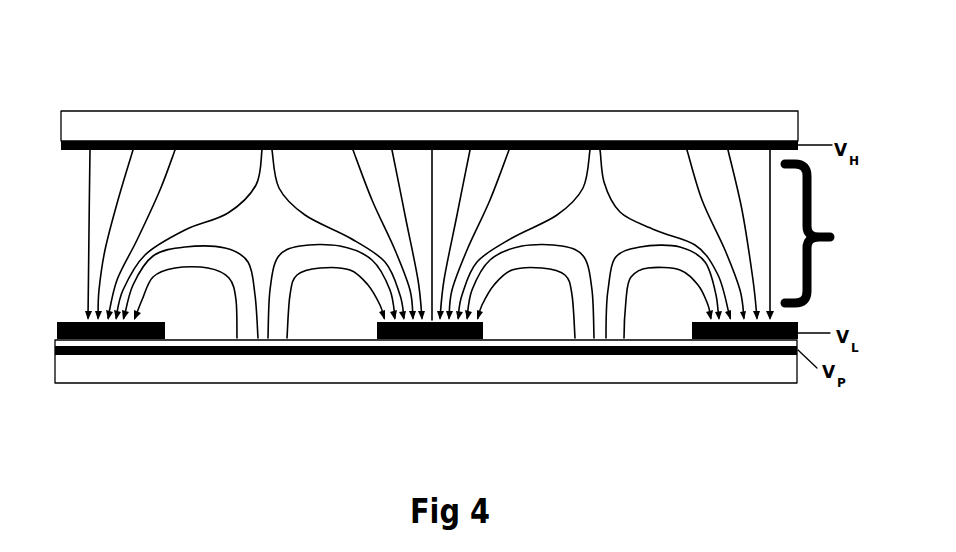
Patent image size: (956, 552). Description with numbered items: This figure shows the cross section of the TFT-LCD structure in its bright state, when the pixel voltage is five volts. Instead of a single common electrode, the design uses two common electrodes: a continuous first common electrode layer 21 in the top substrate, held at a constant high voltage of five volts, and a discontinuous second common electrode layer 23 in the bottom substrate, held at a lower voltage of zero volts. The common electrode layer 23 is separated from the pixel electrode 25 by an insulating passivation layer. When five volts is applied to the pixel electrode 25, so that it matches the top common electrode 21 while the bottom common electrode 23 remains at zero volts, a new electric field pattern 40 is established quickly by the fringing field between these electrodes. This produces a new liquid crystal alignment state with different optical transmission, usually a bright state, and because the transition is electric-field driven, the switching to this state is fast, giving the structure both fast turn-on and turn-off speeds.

The first common electrode layer 21 is at (92, 147).
The second common electrode layer 23 is at (80, 321).
The pixel electrode 25 is at (285, 356).
The electric field pattern 40 is at (828, 233).